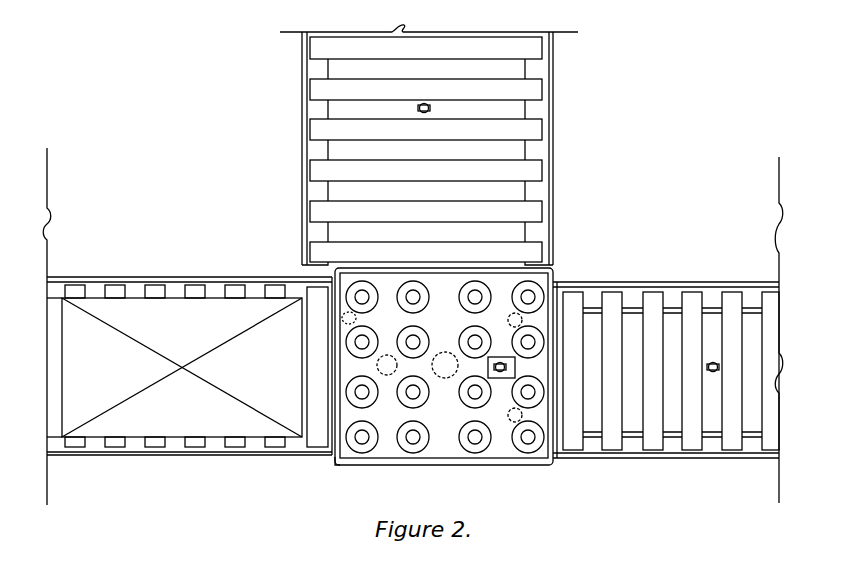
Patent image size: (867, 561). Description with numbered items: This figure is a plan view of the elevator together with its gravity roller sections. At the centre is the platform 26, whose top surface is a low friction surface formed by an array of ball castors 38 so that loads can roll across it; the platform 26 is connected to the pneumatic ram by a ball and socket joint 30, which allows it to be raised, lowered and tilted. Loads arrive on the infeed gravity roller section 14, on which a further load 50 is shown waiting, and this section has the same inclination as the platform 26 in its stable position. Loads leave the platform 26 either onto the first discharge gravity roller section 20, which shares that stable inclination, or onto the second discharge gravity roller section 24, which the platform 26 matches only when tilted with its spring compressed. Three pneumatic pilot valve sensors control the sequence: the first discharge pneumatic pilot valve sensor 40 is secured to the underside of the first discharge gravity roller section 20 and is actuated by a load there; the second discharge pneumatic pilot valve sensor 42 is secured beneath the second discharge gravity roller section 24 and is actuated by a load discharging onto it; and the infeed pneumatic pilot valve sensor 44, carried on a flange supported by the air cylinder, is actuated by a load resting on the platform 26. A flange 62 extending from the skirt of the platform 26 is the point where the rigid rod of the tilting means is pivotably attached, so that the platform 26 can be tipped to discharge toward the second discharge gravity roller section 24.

The infeed gravity roller section 14 is at (177, 445).
The first discharge gravity roller section 20 is at (673, 448).
The second discharge gravity roller section 24 is at (316, 110).
The platform 26 is at (456, 331).
The ball and socket joint 30 is at (445, 378).
The ball castors 38 is at (413, 297).
The first discharge pneumatic pilot valve sensor 40 is at (713, 362).
The second discharge pneumatic pilot valve sensor 42 is at (430, 108).
The infeed pneumatic pilot valve sensor 44 is at (515, 367).
The load 50 is at (191, 333).
The flange 62 is at (343, 316).